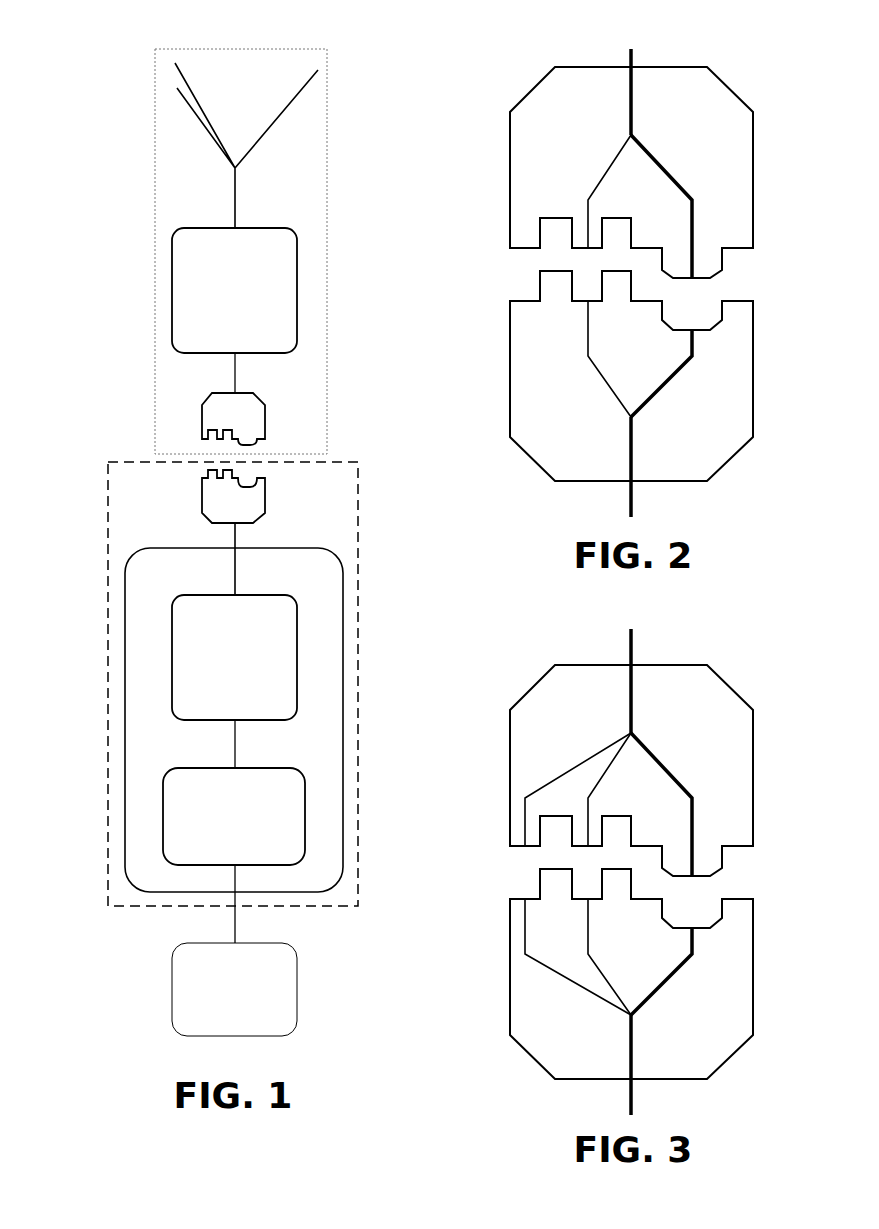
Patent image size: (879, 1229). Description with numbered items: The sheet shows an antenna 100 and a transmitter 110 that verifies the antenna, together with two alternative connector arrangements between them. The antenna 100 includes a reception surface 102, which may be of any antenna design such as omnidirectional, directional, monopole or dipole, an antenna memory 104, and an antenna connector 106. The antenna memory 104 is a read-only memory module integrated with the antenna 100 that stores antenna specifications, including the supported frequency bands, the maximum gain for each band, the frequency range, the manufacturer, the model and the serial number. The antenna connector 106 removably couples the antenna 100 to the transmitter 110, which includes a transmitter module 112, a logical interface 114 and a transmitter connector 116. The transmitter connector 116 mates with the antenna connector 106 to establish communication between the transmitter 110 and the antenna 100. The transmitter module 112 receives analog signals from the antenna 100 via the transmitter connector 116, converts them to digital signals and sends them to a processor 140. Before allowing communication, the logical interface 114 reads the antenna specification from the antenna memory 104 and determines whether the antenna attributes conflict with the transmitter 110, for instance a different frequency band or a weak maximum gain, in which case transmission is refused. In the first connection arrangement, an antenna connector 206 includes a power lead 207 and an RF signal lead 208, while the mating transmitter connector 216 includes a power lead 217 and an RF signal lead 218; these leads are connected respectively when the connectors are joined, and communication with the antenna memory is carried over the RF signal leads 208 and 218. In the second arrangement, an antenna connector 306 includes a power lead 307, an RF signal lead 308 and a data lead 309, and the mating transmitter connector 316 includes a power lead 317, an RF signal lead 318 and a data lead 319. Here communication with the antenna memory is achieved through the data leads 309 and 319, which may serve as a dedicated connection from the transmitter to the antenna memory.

In FIG. 1, the antenna 100 is at (191, 251).
In FIG. 1, the reception surface 102 is at (246, 142).
In FIG. 1, the antenna memory 104 is at (183, 290).
In FIG. 1, the antenna connector 106 is at (181, 409).
In FIG. 1, the transmitter 110 is at (183, 684).
In FIG. 1, the transmitter module 112 is at (214, 640).
In FIG. 1, the logical interface 114 is at (218, 798).
In FIG. 1, the transmitter connector 116 is at (277, 508).
In FIG. 1, the processor 140 is at (183, 989).
In FIG. 2, the antenna connector 206 is at (590, 163).
In FIG. 2, the power lead 207 is at (685, 204).
In FIG. 2, the RF signal lead 208 is at (633, 191).
In FIG. 2, the transmitter connector 216 is at (592, 394).
In FIG. 2, the power lead 217 is at (685, 375).
In FIG. 2, the RF signal lead 218 is at (633, 359).
In FIG. 3, the antenna connector 306 is at (590, 752).
In FIG. 3, the power lead 307 is at (685, 802).
In FIG. 3, the RF signal lead 308 is at (633, 789).
In FIG. 3, the data lead 309 is at (576, 781).
In FIG. 3, the transmitter connector 316 is at (592, 992).
In FIG. 3, the power lead 317 is at (685, 973).
In FIG. 3, the RF signal lead 318 is at (633, 957).
In FIG. 3, the data lead 319 is at (576, 963).